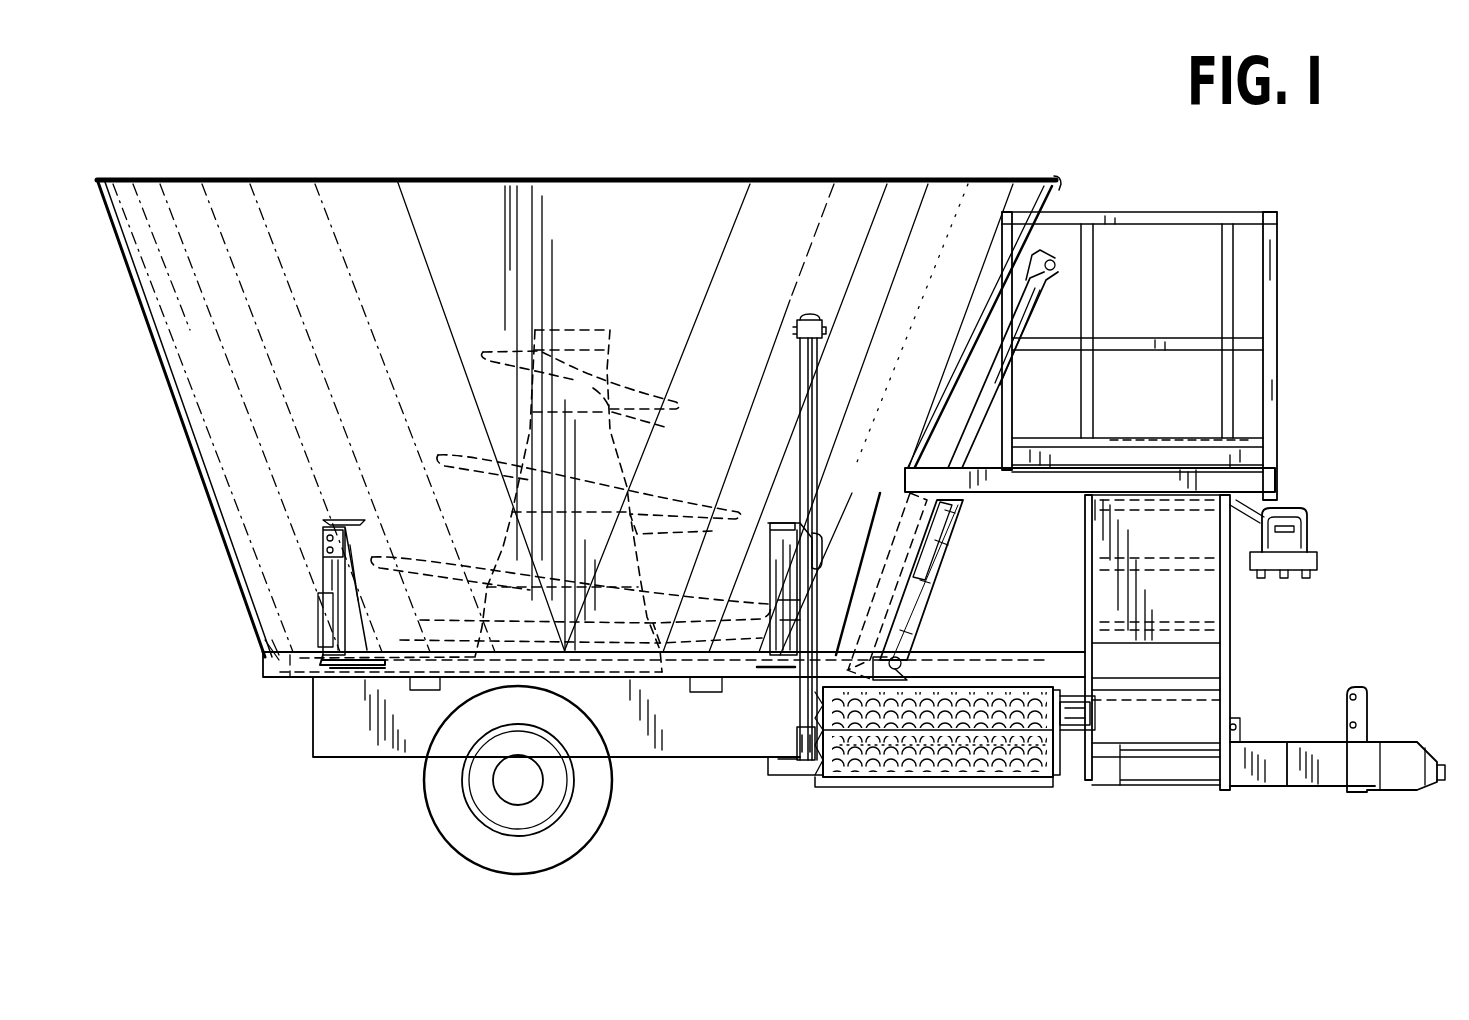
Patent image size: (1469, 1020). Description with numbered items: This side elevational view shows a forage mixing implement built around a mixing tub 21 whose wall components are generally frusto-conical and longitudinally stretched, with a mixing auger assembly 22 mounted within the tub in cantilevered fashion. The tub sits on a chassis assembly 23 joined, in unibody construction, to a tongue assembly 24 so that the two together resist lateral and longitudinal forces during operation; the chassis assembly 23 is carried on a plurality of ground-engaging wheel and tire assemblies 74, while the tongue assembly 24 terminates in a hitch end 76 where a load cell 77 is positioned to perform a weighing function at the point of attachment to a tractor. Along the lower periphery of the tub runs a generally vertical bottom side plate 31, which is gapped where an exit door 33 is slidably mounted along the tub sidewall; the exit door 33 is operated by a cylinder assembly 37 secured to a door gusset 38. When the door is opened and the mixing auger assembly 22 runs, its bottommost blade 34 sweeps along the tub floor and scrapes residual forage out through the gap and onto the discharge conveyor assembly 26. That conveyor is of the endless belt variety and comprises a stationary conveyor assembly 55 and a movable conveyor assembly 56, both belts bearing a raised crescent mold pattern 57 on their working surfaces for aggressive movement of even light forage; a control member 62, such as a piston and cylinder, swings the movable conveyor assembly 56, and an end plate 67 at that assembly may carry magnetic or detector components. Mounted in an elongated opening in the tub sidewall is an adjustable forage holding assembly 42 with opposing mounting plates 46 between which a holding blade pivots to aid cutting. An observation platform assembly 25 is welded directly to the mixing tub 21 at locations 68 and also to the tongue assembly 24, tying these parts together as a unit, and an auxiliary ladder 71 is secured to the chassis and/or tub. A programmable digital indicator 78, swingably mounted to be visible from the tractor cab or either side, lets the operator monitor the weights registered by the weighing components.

The mixing tub 21 is at (930, 182).
The mixing auger assembly 22 is at (583, 328).
The chassis assembly 23 is at (312, 720).
The tongue assembly 24 is at (1242, 745).
The observation platform assembly 25 is at (1278, 462).
The discharge conveyor assembly 26 is at (815, 778).
The bottom side plate 31 is at (268, 665).
The exit door 33 is at (920, 560).
The bottommost blade 34 is at (276, 650).
The cylinder assembly 37 is at (962, 524).
The door gusset 38 is at (905, 668).
The adjustable forage holding assembly 42 is at (343, 642).
The mounting plates 46 is at (352, 668).
The stationary conveyor assembly 55 is at (1062, 700).
The movable conveyor assembly 56 is at (1062, 760).
The crescent mold pattern 57 is at (1007, 762).
The control member 62 is at (803, 418).
The end plate 67 is at (936, 790).
The locations 68 is at (912, 477).
The auxiliary ladder 71 is at (1225, 646).
The ground-engaging wheel and tire assemblies 74 is at (590, 775).
The hitch end 76 is at (1378, 780).
The load cell 77 is at (1440, 770).
The programmable digital indicator 78 is at (1310, 538).